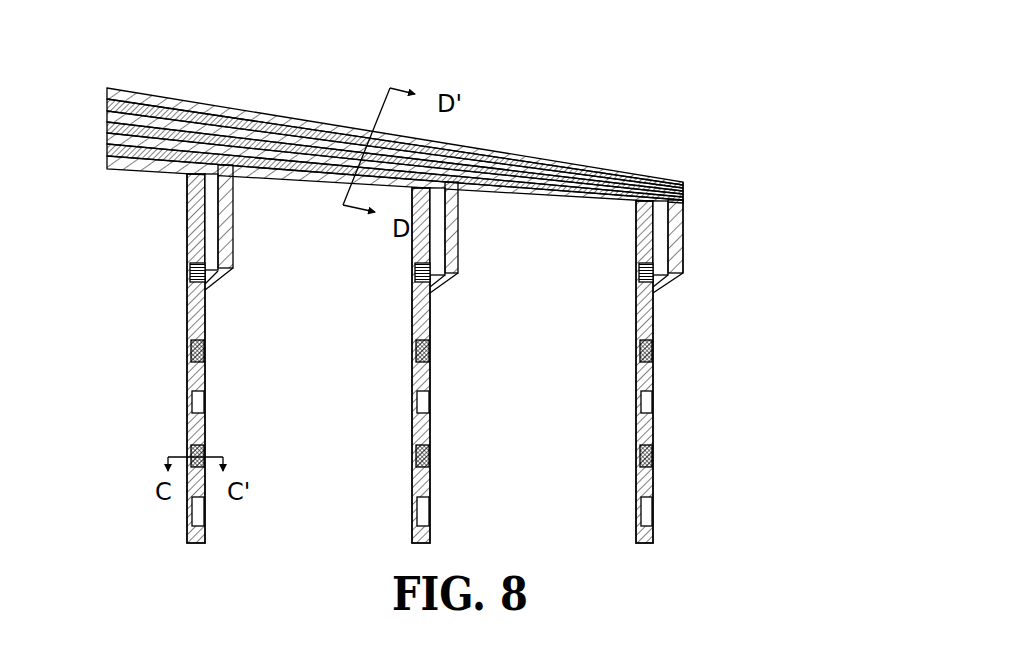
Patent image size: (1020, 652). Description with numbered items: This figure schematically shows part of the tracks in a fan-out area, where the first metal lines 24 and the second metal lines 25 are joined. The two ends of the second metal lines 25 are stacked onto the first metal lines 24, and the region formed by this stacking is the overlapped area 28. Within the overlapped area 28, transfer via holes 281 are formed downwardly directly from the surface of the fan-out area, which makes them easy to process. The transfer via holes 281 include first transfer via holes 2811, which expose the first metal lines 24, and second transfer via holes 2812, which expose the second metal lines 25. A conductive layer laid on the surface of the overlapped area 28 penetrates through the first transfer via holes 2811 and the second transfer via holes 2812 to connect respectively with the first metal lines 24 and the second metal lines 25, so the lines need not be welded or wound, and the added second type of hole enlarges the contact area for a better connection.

The overlapped area 28 is at (560, 162).
The first metal lines 24 is at (193, 238).
The second metal lines 25 is at (232, 276).
The transfer via holes 281 is at (531, 429).
The first transfer via holes 2811 is at (655, 357).
The second transfer via holes 2812 is at (655, 413).